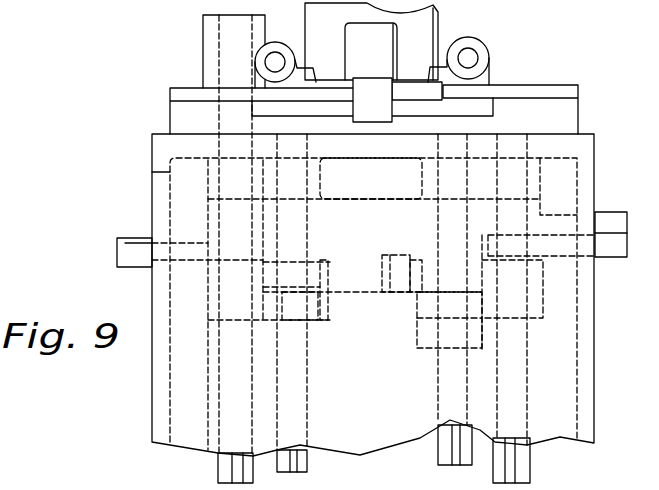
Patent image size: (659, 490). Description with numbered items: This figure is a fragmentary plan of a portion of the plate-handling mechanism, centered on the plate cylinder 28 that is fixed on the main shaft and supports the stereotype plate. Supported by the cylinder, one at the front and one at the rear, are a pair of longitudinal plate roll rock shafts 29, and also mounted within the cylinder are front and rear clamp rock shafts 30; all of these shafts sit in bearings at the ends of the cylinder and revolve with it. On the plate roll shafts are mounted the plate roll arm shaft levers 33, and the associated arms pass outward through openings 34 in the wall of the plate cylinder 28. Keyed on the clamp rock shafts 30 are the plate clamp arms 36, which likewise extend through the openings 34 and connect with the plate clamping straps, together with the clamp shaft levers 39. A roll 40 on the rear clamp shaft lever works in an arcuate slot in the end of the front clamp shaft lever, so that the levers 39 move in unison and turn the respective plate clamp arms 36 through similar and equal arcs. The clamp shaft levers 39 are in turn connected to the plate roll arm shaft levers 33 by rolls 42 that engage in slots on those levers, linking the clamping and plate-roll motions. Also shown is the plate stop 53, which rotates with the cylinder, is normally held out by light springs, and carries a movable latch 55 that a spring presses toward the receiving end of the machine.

The plate cylinder 28 is at (593, 388).
The plate roll rock shafts 29 is at (433, 457).
The clamp rock shafts 30 is at (537, 470).
The plate roll arm shaft levers 33 is at (418, 355).
The openings 34 is at (613, 172).
The plate clamp arms 36 is at (627, 267).
The clamp shaft levers 39 is at (415, 310).
The roll 40 is at (393, 263).
The rolls 42 is at (433, 355).
The plate stop 53 is at (425, 108).
The movable latch 55 is at (368, 115).